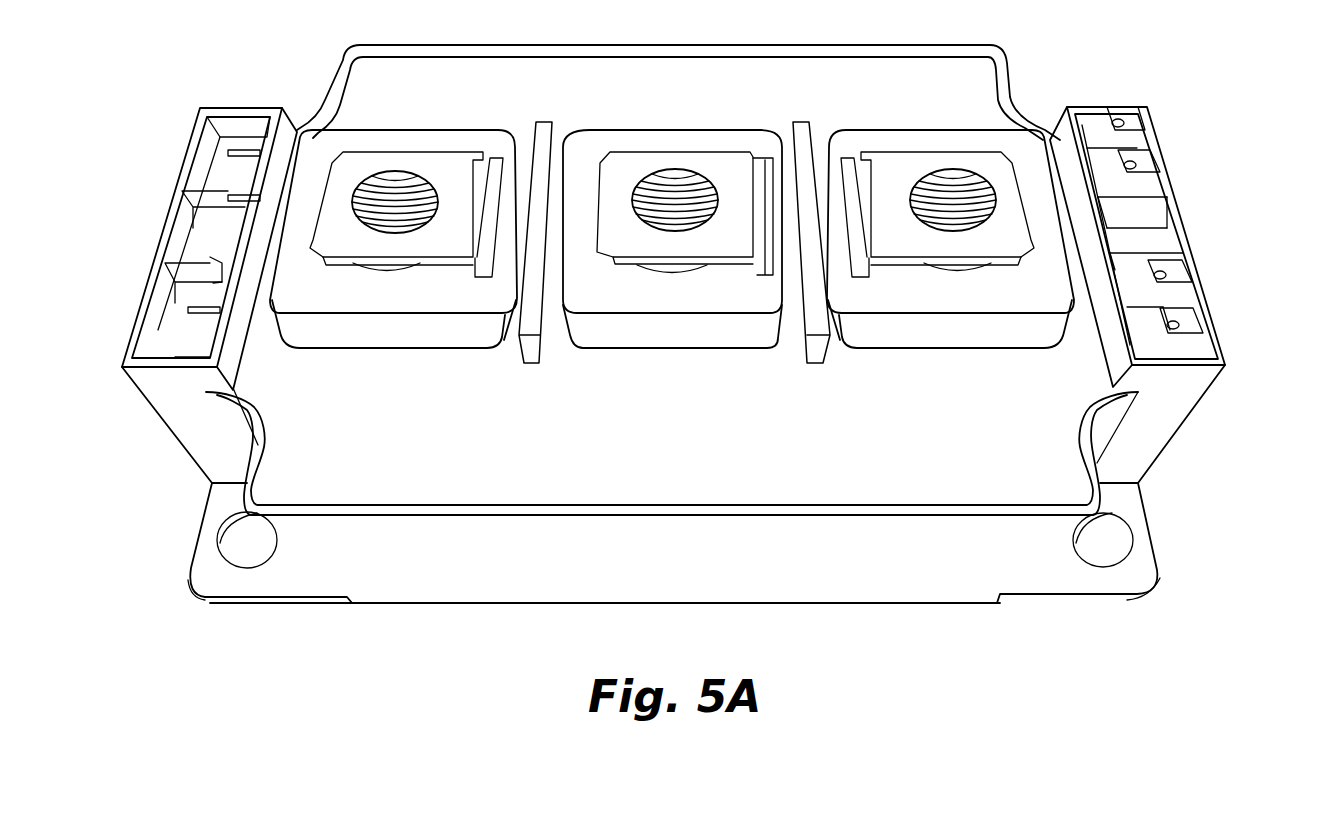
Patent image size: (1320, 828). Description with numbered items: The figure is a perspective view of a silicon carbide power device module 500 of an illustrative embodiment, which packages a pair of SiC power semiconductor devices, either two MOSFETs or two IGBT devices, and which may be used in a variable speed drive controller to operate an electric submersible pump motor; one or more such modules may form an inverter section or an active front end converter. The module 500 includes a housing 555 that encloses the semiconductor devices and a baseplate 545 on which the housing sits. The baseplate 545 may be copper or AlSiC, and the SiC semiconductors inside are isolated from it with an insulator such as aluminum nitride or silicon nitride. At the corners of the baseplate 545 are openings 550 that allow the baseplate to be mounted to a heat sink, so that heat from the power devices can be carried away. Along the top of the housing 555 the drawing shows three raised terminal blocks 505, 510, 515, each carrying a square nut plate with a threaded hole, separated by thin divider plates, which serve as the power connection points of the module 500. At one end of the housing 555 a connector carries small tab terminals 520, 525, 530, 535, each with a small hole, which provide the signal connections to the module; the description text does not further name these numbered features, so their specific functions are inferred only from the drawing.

The module 500 is at (1046, 658).
The first terminal block 505 is at (400, 332).
The second terminal block 510 is at (682, 332).
The third terminal block 515 is at (972, 332).
The signal terminal 520 is at (1185, 320).
The signal terminal 525 is at (1170, 268).
The signal terminal 530 is at (1133, 118).
The signal terminal 535 is at (1143, 160).
The baseplate 545 is at (1127, 600).
The openings 550 is at (1105, 540).
The housing 555 is at (686, 575).